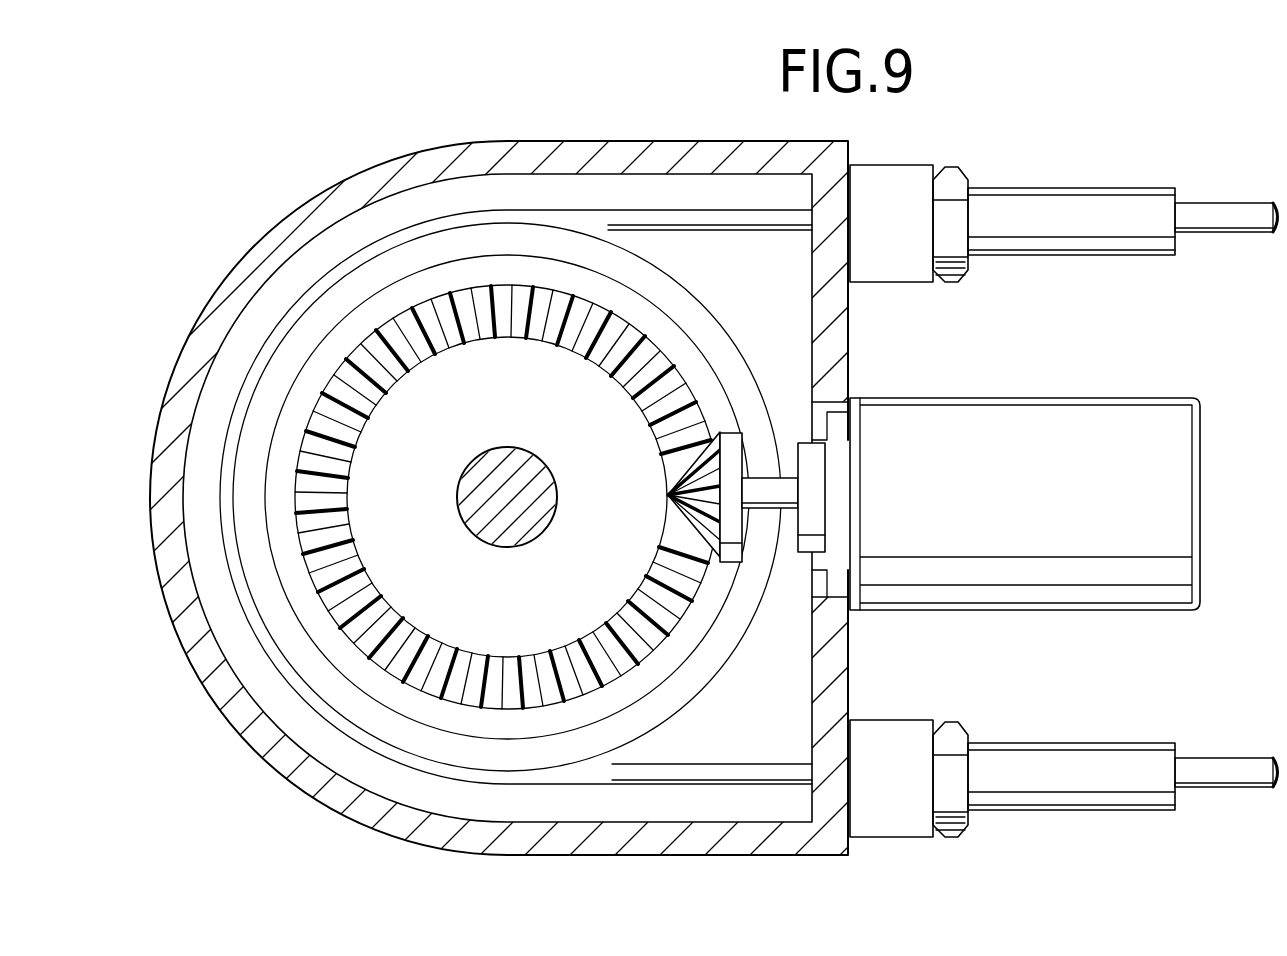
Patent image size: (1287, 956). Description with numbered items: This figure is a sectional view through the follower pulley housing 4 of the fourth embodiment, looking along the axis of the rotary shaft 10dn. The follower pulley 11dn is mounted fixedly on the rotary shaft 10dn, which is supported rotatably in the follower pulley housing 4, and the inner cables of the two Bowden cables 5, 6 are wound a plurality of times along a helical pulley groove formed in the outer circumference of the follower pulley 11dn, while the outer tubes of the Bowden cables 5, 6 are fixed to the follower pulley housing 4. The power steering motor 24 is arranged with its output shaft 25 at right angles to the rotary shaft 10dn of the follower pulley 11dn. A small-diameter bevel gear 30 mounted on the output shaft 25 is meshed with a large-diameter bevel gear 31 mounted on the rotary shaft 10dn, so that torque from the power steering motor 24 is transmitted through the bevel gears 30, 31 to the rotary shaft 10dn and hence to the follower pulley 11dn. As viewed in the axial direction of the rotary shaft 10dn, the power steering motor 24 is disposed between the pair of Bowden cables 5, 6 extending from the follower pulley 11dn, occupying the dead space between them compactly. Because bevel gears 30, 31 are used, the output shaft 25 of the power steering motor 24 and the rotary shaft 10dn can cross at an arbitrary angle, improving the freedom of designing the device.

The follower pulley housing 4 is at (442, 158).
The follower pulley 11dn is at (502, 235).
The rotary shaft 10dn is at (500, 497).
The small-diameter bevel gear 30 is at (693, 452).
The output shaft 25 is at (760, 497).
The large-diameter bevel gear 31 is at (652, 633).
The power steering motor 24 is at (1090, 425).
The Bowden cable 5 is at (1195, 212).
The Bowden cable 6 is at (1208, 765).